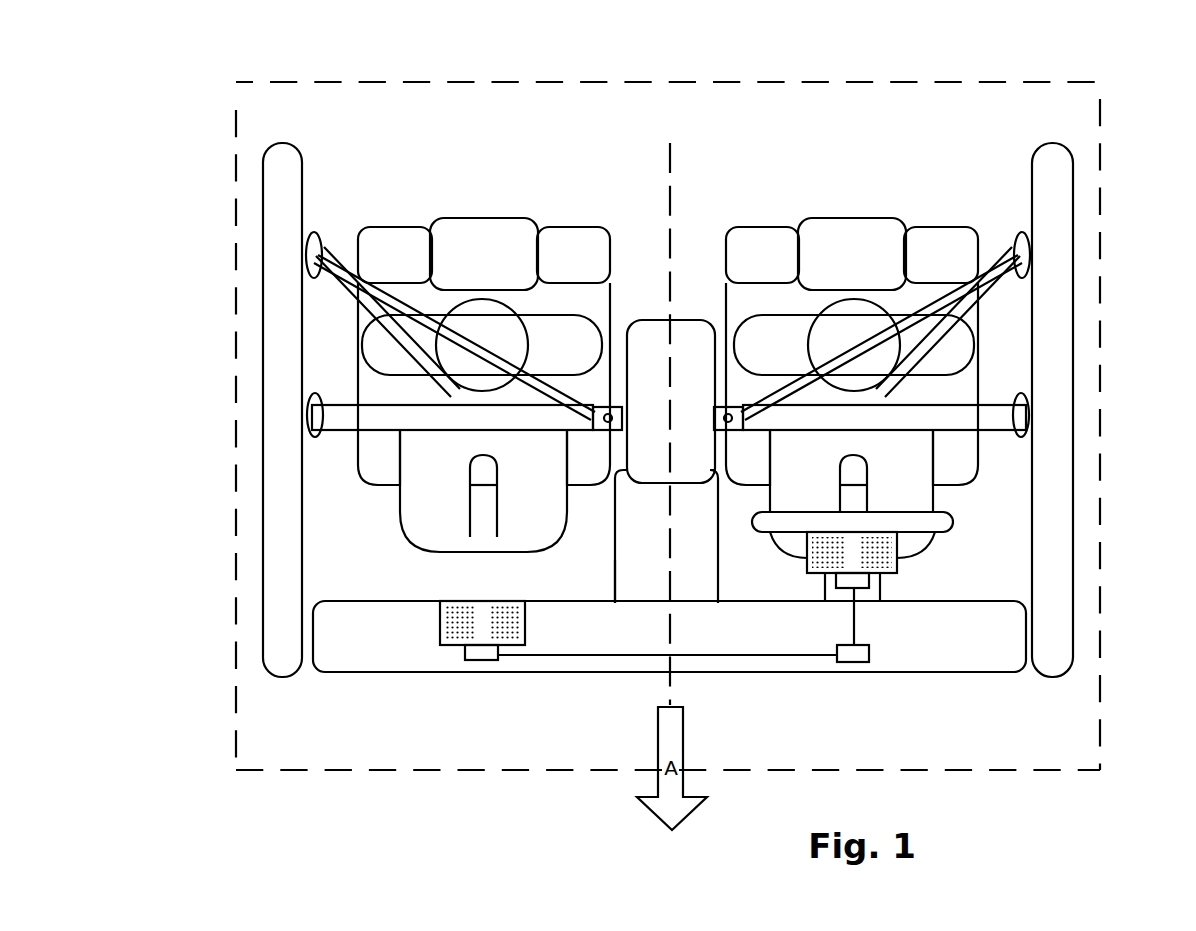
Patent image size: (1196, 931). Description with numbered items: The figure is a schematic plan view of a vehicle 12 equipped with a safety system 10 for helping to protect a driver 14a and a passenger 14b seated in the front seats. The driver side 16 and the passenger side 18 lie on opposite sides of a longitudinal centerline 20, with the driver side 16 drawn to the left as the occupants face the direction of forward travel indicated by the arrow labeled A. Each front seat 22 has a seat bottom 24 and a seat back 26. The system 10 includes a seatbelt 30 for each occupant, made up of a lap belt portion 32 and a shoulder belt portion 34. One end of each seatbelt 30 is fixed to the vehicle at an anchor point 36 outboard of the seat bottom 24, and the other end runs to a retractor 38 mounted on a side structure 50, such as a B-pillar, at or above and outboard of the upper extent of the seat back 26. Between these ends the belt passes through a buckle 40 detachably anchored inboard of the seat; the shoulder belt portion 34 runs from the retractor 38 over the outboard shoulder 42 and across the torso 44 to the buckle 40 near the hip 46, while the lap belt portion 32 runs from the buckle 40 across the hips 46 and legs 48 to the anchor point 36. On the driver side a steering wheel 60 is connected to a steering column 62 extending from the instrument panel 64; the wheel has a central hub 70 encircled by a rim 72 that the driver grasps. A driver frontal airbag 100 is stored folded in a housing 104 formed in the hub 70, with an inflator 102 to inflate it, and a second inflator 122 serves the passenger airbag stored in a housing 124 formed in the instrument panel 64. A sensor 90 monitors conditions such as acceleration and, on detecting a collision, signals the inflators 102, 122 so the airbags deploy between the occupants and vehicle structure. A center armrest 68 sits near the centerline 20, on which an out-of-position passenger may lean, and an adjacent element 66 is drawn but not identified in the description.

The safety system 10 is at (560, 745).
The vehicle 12 is at (708, 82).
The driver 14a is at (854, 345).
The passenger 14b is at (482, 345).
The driver side 16 is at (867, 98).
The passenger side 18 is at (478, 98).
The longitudinal centerline 20 is at (670, 170).
The front seat 22 is at (489, 240).
The seat bottom 24 is at (380, 390).
The seat back 26 is at (565, 228).
The seatbelt 30 is at (357, 307).
The lap belt portion 32 is at (386, 420).
The shoulder belt portion 34 is at (1005, 250).
The anchor point 36 is at (308, 413).
The retractor 38 is at (308, 250).
The buckle 40 is at (640, 414).
The outboard shoulder 42 is at (360, 340).
The torso 44 is at (763, 350).
The hip 46 is at (430, 397).
The legs 48 is at (530, 513).
The side structure 50 is at (288, 330).
The steering wheel 60 is at (932, 522).
The steering column 62 is at (873, 595).
The instrument panel 64 is at (952, 660).
The support wall 66 is at (640, 547).
The center armrest 68 is at (622, 472).
The central hub 70 is at (795, 568).
The rim 72 is at (793, 524).
The sensor 90 is at (858, 664).
The driver frontal airbag 100 is at (897, 580).
The inflator 102 is at (850, 590).
The housing 104 is at (830, 580).
The inflator 122 is at (478, 660).
The housing 124 is at (455, 645).